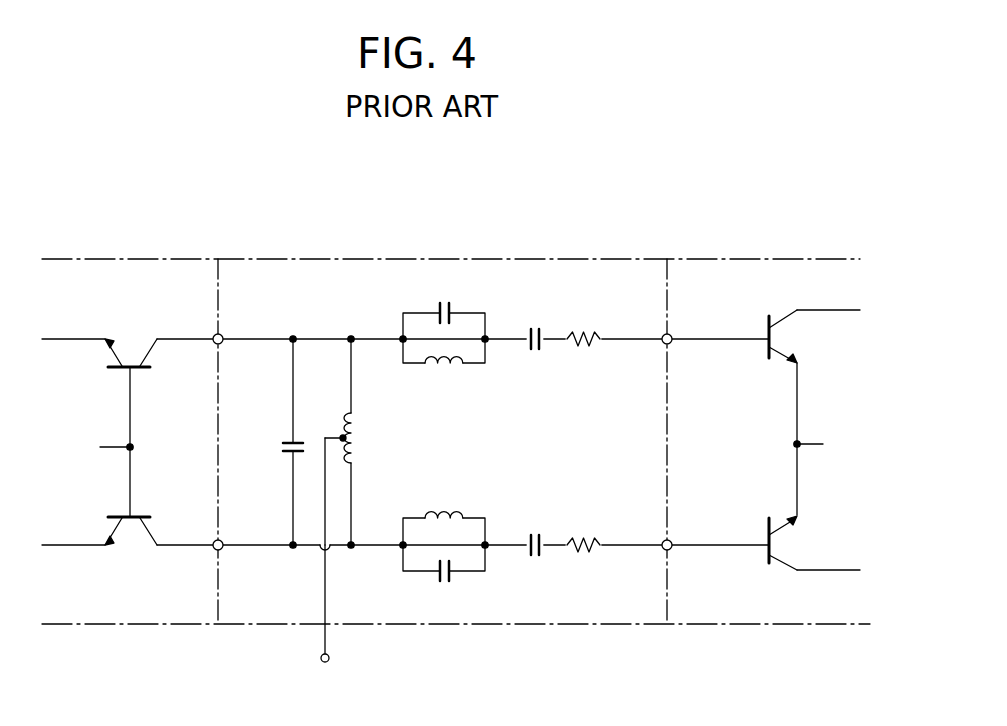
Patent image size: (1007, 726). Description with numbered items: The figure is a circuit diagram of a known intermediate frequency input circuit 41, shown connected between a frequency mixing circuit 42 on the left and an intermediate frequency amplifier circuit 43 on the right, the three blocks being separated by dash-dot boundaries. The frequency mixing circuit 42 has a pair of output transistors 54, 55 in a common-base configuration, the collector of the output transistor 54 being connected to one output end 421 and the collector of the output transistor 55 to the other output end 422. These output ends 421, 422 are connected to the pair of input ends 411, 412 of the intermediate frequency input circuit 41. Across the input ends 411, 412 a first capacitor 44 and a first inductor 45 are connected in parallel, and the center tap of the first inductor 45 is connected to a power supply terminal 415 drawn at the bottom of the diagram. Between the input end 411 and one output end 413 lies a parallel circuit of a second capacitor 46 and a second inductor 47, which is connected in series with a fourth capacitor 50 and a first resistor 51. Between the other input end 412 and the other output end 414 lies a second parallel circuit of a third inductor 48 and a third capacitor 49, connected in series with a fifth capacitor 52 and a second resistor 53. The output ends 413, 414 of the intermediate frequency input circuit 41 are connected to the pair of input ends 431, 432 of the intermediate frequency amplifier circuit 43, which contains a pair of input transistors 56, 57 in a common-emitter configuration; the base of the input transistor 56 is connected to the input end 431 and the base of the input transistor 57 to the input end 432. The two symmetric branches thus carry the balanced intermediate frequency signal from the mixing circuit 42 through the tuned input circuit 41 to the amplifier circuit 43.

The intermediate frequency input circuit 41 is at (448, 258).
The frequency mixing circuit 42 is at (156, 259).
The intermediate frequency amplifier circuit 43 is at (783, 258).
The first capacitor 44 is at (286, 442).
The first inductor 45 is at (358, 449).
The second capacitor 46 is at (454, 312).
The second inductor 47 is at (441, 376).
The third inductor 48 is at (448, 508).
The third capacitor 49 is at (452, 573).
The fourth capacitor 50 is at (530, 350).
The first resistor 51 is at (586, 350).
The fifth capacitor 52 is at (530, 535).
The second resistor 53 is at (586, 535).
The output transistor 54 is at (127, 346).
The output transistor 55 is at (128, 547).
The input transistor 56 is at (784, 337).
The input transistor 57 is at (784, 546).
The input end 411 is at (222, 337).
The input end 412 is at (221, 547).
The output end 413 is at (664, 336).
The output end 414 is at (664, 549).
The power supply terminal 415 is at (329, 660).
The output end 421 is at (213, 337).
The output end 422 is at (215, 548).
The input end 431 is at (670, 337).
The input end 432 is at (670, 549).